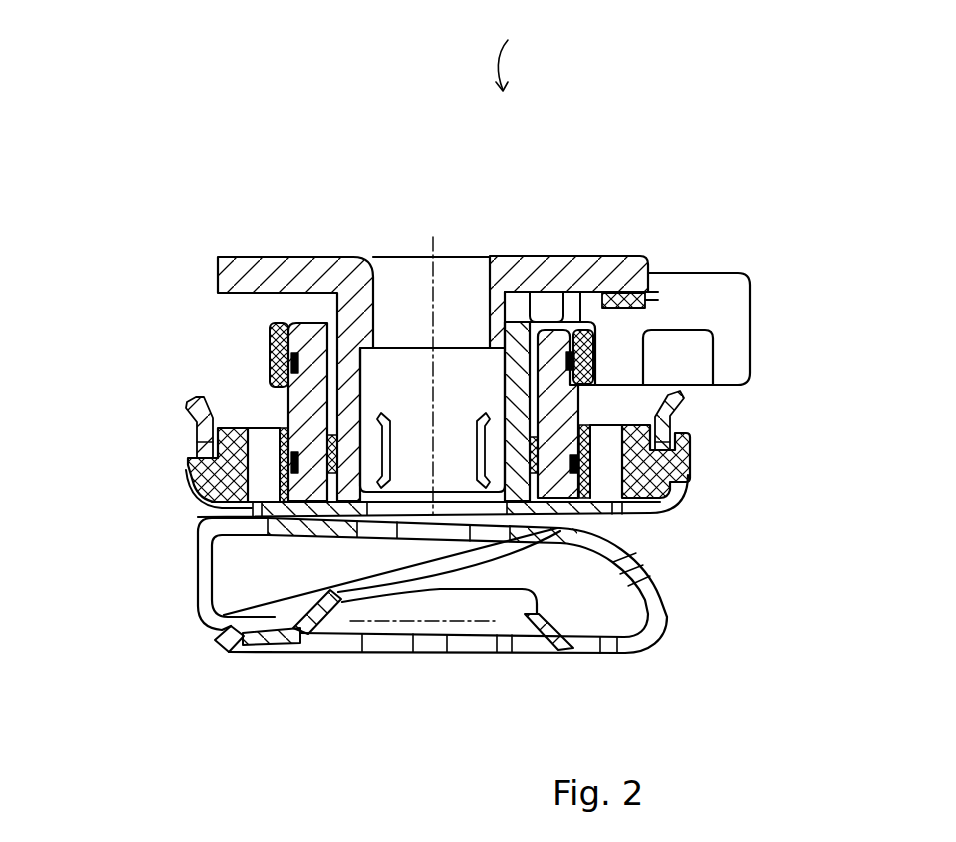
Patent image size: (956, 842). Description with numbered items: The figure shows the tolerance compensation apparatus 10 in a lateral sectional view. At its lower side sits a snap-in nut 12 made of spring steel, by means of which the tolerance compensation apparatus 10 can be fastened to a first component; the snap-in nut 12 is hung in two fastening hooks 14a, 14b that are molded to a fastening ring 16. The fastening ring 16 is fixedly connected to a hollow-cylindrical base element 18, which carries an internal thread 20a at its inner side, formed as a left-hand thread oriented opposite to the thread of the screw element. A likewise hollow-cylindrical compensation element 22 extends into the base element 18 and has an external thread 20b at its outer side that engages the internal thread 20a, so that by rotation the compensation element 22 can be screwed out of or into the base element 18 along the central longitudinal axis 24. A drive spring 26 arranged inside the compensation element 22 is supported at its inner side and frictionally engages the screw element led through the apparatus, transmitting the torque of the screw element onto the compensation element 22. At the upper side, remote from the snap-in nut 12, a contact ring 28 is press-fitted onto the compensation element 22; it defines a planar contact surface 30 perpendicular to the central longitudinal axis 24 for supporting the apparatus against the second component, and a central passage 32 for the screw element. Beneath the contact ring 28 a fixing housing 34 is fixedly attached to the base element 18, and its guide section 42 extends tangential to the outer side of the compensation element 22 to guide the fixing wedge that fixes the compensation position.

The tolerance compensation apparatus 10 is at (521, 49).
The snap-in nut 12 is at (658, 637).
The fastening hook 14a is at (690, 455).
The fastening hook 14b is at (186, 461).
The fastening ring 16 is at (287, 403).
The base element 18 is at (281, 388).
The internal thread 20a is at (283, 322).
The external thread 20b is at (287, 323).
The compensation element 22 is at (217, 259).
The central longitudinal axis 24 is at (433, 240).
The drive spring 26 is at (410, 375).
The contact ring 28 is at (617, 273).
The planar contact surface 30 is at (547, 256).
The central passage 32 is at (497, 256).
The fixing housing 34 is at (702, 273).
The guide section 42 is at (695, 385).